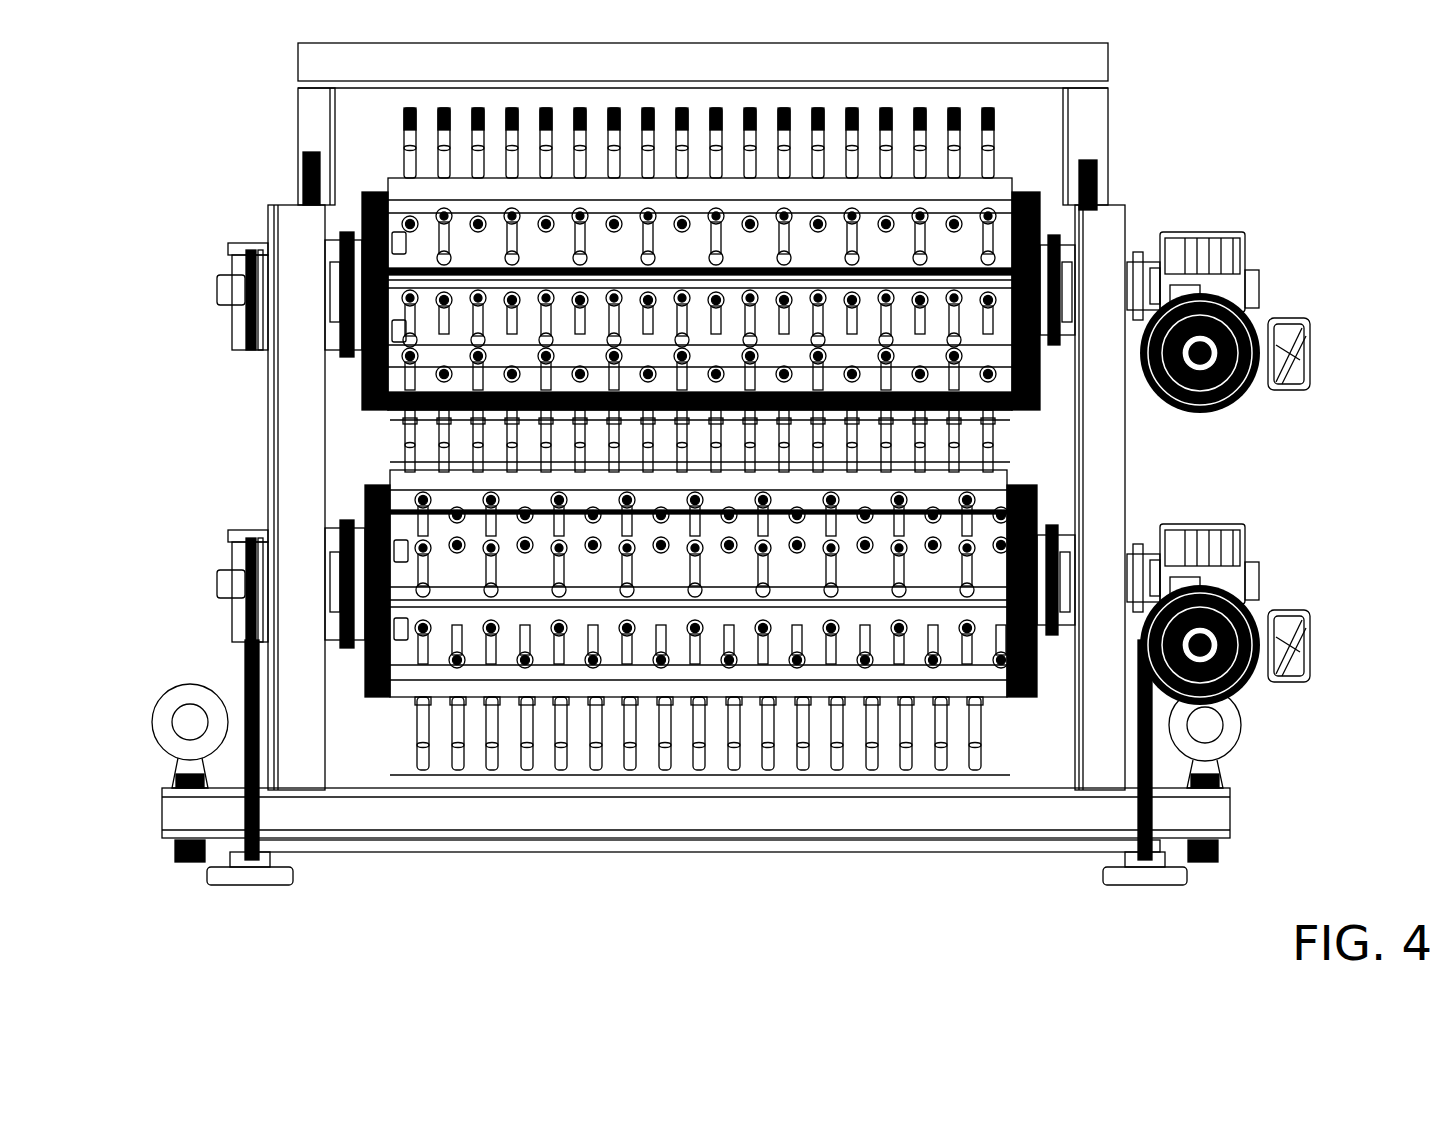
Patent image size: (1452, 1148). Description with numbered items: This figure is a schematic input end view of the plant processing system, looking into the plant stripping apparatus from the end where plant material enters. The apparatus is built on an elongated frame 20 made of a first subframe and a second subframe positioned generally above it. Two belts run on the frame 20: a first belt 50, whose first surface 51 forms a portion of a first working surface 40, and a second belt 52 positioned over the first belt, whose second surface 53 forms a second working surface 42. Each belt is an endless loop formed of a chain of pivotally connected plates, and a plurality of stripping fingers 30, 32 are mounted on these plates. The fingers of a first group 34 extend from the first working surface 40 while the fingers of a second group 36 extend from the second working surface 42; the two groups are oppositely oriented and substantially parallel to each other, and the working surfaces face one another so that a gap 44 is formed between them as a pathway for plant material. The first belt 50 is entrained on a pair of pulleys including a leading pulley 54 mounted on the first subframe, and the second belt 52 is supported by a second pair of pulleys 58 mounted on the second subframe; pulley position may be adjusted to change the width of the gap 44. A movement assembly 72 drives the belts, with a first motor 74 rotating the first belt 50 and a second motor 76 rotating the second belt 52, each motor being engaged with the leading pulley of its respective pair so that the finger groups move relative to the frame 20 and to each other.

The frame 20 is at (565, 820).
The stripping fingers 30 is at (975, 762).
The stripping fingers 32 is at (1002, 128).
The first group of stripping fingers 34 is at (1005, 755).
The second group of stripping fingers 36 is at (1024, 148).
The first working surface 40 is at (992, 503).
The second working surface 42 is at (1002, 425).
The gap 44 is at (386, 447).
The first belt 50 is at (749, 704).
The first surface 51 is at (330, 626).
The second belt 52 is at (797, 250).
The second surface 53 is at (335, 330).
The leading pulley 54 is at (1045, 560).
The second pair of pulleys 58 is at (1040, 243).
The movement assembly 72 is at (1271, 330).
The first motor 74 is at (1262, 605).
The second motor 76 is at (1250, 400).